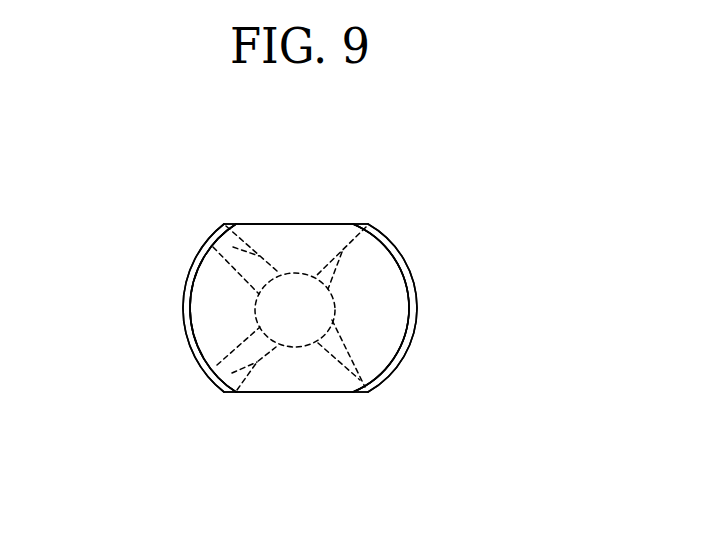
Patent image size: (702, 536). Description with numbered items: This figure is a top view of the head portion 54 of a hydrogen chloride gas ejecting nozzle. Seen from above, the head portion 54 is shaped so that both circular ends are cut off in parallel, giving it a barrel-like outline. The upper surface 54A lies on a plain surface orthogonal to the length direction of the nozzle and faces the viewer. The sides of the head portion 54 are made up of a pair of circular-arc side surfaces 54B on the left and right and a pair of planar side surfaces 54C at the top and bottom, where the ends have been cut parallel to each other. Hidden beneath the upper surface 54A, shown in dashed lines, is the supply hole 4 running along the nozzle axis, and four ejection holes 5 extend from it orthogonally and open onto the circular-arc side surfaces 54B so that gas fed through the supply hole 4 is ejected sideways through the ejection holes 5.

The supply hole 4 is at (329, 302).
The ejection holes 5 is at (221, 224).
The head portion 54 is at (313, 394).
The upper surface 54A is at (215, 291).
The circular-arc side surfaces 54B is at (185, 332).
The planar side surfaces 54C is at (278, 224).